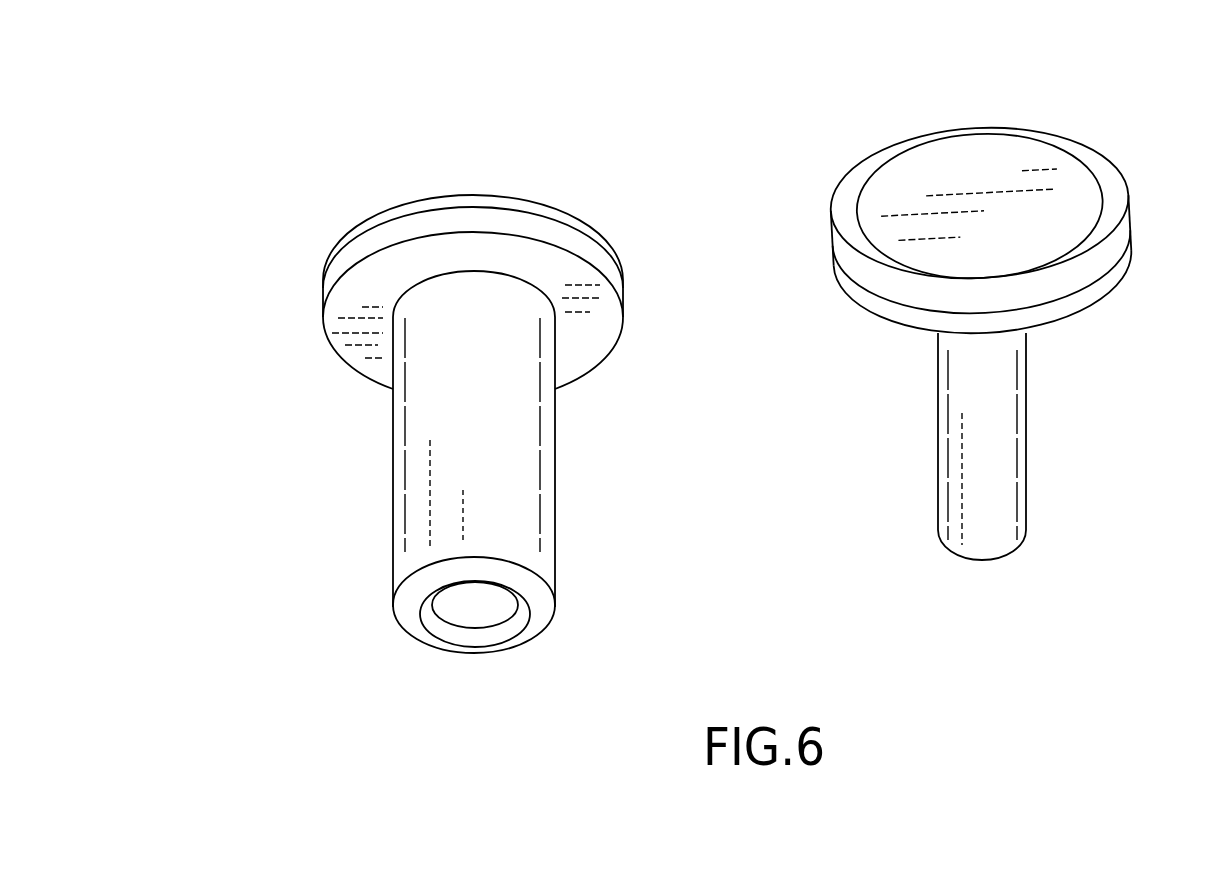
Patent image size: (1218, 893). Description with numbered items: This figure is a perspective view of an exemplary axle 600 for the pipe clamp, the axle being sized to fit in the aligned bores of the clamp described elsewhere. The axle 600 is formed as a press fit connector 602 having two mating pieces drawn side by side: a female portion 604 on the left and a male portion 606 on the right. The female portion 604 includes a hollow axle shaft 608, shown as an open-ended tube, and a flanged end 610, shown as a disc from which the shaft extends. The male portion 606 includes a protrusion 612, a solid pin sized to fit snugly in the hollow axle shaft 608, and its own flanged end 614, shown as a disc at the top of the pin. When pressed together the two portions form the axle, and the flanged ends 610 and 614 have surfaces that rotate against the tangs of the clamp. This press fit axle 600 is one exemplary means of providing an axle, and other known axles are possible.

The axle 600 is at (296, 111).
The press fit connector 602 is at (860, 132).
The female portion 604 is at (392, 477).
The male portion 606 is at (1027, 467).
The hollow axle shaft 608 is at (530, 532).
The flanged end 610 is at (590, 340).
The protrusion 612 is at (952, 517).
The flanged end 614 is at (1120, 227).